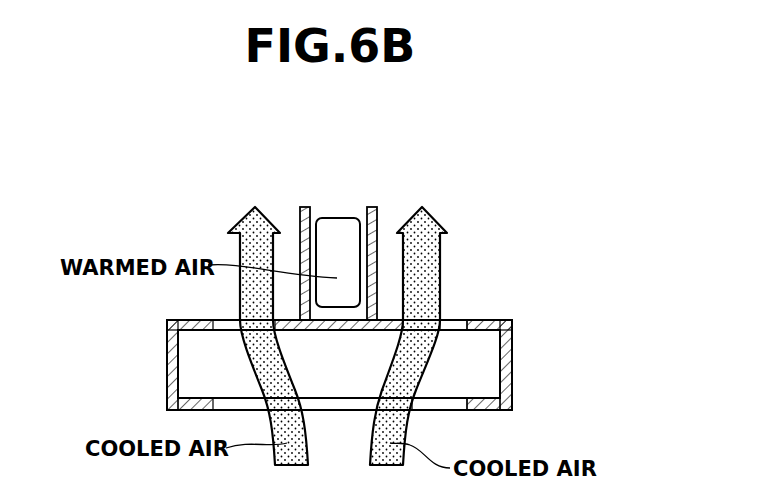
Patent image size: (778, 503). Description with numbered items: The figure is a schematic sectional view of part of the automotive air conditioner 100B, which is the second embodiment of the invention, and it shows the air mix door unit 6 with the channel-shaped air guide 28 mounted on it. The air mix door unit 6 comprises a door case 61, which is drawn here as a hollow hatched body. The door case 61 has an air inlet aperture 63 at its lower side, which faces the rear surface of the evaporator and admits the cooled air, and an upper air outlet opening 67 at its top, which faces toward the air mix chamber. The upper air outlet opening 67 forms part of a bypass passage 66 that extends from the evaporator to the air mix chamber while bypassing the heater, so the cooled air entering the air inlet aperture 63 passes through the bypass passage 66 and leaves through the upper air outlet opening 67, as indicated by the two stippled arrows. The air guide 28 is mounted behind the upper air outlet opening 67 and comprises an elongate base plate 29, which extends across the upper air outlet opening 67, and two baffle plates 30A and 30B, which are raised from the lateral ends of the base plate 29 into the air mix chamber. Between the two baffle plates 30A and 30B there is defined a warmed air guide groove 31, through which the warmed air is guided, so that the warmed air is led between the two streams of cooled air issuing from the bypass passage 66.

The air mix door unit 6 is at (377, 347).
The air guide 28 is at (310, 206).
The base plate 29 is at (337, 332).
The baffle plate 30A is at (377, 228).
The baffle plate 30B is at (300, 223).
The warmed air guide groove 31 is at (360, 240).
The door case 61 is at (512, 330).
The air inlet aperture 63 is at (455, 410).
The bypass passage 66 is at (483, 370).
The upper air outlet opening 67 is at (459, 320).
The automotive air conditioner 100B is at (548, 148).